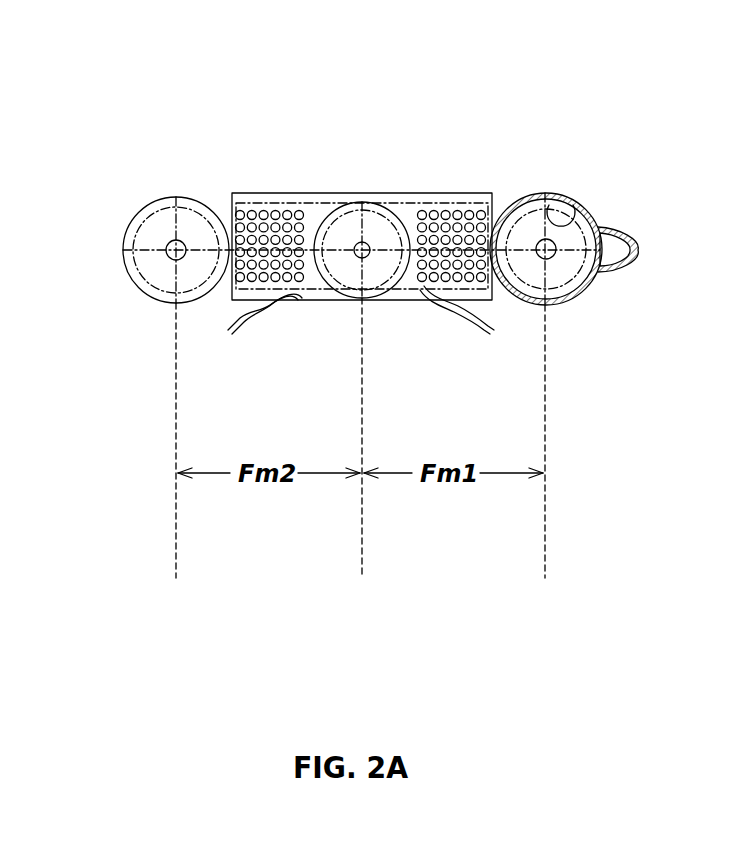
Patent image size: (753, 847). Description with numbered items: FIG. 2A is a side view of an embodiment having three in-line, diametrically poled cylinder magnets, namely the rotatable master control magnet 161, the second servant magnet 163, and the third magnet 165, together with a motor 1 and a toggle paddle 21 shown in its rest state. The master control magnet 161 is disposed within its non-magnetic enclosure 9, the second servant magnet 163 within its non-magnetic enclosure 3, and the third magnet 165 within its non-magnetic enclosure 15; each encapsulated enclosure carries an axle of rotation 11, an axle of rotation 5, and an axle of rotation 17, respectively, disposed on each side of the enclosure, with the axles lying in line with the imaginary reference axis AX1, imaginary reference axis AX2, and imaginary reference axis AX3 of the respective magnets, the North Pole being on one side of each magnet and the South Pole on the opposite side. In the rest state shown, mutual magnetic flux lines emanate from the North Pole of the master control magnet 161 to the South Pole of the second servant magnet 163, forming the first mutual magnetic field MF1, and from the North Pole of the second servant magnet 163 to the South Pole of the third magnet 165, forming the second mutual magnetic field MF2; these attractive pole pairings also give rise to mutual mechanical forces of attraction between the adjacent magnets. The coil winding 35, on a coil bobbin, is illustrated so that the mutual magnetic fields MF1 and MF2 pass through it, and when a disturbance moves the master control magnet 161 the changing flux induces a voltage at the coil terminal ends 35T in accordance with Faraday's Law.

The motor 1 is at (420, 194).
The non-magnetic enclosure 3 is at (330, 194).
The axle of rotation 5 is at (370, 215).
The non-magnetic enclosure 9 is at (578, 197).
The axle of rotation 11 is at (556, 257).
The non-magnetic enclosure 15 is at (186, 196).
The axle of rotation 17 is at (168, 259).
The toggle paddle 21 is at (616, 232).
The coil winding 35 is at (262, 205).
The coil terminal ends 35T is at (250, 316).
The master control magnet 161 is at (588, 287).
The second servant magnet 163 is at (387, 283).
The third magnet 165 is at (130, 275).
The imaginary reference axis AX1 is at (568, 198).
The imaginary reference axis AX2 is at (362, 250).
The imaginary reference axis AX3 is at (175, 220).
The first mutual magnetic field MF1 is at (413, 194).
The second mutual magnetic field MF2 is at (282, 205).